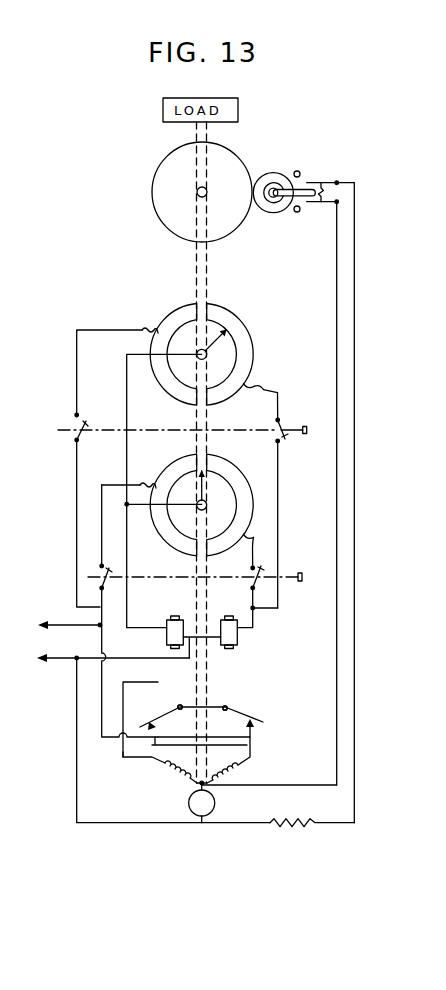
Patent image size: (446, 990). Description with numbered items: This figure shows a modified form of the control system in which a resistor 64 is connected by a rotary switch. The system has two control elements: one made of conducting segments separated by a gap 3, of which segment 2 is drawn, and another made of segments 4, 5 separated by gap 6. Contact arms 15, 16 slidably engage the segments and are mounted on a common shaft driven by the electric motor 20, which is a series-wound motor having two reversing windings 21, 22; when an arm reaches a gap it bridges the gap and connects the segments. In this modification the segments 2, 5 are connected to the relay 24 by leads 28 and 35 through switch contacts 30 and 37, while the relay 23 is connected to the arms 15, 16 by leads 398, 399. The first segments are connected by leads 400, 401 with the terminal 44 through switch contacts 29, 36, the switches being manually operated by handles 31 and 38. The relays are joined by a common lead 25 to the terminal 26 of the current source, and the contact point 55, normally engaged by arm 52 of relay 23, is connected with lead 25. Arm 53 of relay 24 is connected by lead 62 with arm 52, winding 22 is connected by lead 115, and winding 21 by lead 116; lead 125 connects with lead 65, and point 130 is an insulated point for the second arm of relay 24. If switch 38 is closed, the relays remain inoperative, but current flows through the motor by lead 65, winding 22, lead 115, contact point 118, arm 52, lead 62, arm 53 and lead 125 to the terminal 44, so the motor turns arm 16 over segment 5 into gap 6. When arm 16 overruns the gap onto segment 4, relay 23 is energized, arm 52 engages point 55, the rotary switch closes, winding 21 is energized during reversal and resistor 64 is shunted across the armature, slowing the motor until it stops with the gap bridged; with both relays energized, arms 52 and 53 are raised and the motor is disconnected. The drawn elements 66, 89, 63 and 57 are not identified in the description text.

The load disc 66 is at (233, 156).
The centrifugal switch 89 is at (301, 184).
The conductor 63 is at (354, 310).
The conductor 57 is at (337, 308).
The conducting segment 4 is at (170, 313).
The conducting segment 5 is at (223, 308).
The gap 6 is at (202, 305).
The contact arm 16 is at (219, 346).
The switch 36 is at (116, 385).
The lead 401 is at (77, 494).
The switch 37 is at (275, 422).
The handle 38 is at (304, 426).
The lead 35 is at (280, 514).
The conducting segment 2 is at (240, 477).
The gap 3 is at (207, 463).
The contact arm 15 is at (207, 486).
The lead 398 is at (175, 461).
The lead 399 is at (136, 508).
The switch 29 is at (108, 570).
The lead 400 is at (98, 540).
The switch 30 is at (259, 571).
The handle 31 is at (300, 573).
The lead 28 is at (254, 601).
The relay 23 is at (172, 619).
The relay 24 is at (230, 619).
The common lead 25 is at (123, 658).
The terminal 44 is at (48, 618).
The terminal 26 is at (50, 661).
The lead 65 is at (77, 782).
The resistor 64 is at (312, 836).
The lead 125 is at (99, 705).
The contact point 55 is at (151, 690).
The insulated point 130 is at (251, 691).
The contact arm 52 is at (165, 705).
The lead 62 is at (222, 695).
The contact arm 53 is at (266, 713).
The contact point 118 is at (153, 726).
The lead 115 is at (250, 747).
The lead 116 is at (123, 753).
The reversing winding 21 is at (176, 779).
The reversing winding 22 is at (239, 766).
The electric motor 20 is at (215, 803).